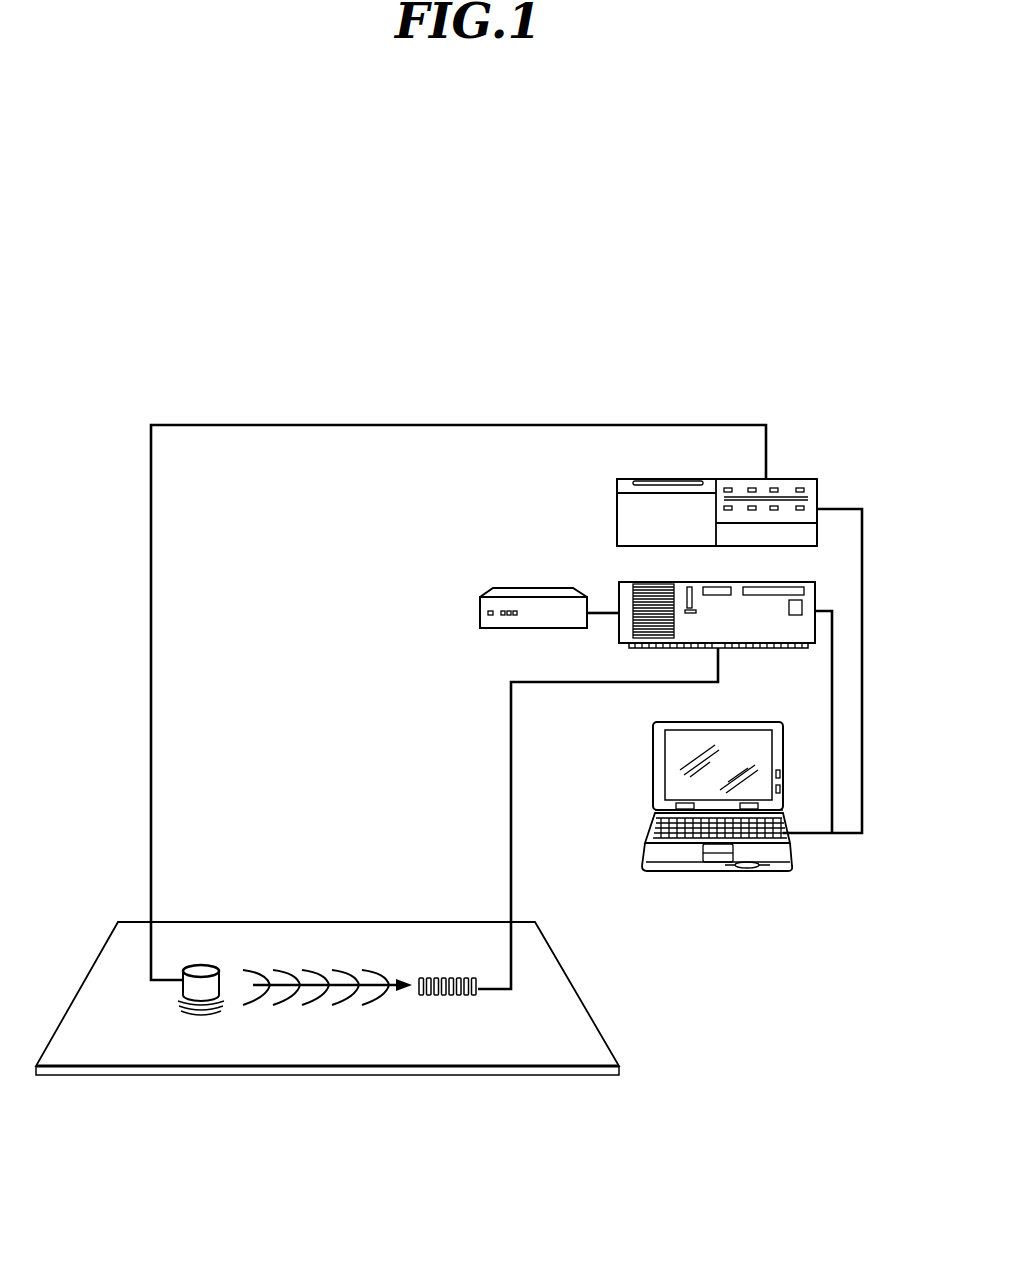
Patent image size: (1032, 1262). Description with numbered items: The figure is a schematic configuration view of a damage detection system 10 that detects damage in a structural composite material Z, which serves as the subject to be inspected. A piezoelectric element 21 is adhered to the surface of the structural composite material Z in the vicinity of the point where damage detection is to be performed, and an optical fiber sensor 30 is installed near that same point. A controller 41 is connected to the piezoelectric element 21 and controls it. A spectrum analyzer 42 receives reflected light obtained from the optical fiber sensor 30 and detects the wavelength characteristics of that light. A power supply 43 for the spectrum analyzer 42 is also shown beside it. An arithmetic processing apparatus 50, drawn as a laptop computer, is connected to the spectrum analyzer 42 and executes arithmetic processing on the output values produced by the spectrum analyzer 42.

The damage detection system 10 is at (808, 318).
The piezoelectric element 21 is at (203, 970).
The optical fiber sensor 30 is at (458, 977).
The controller 41 is at (803, 479).
The spectrum analyzer 42 is at (815, 588).
The power supply 43 is at (538, 595).
The arithmetic processing apparatus 50 is at (652, 772).
The structural composite material Z is at (518, 1055).